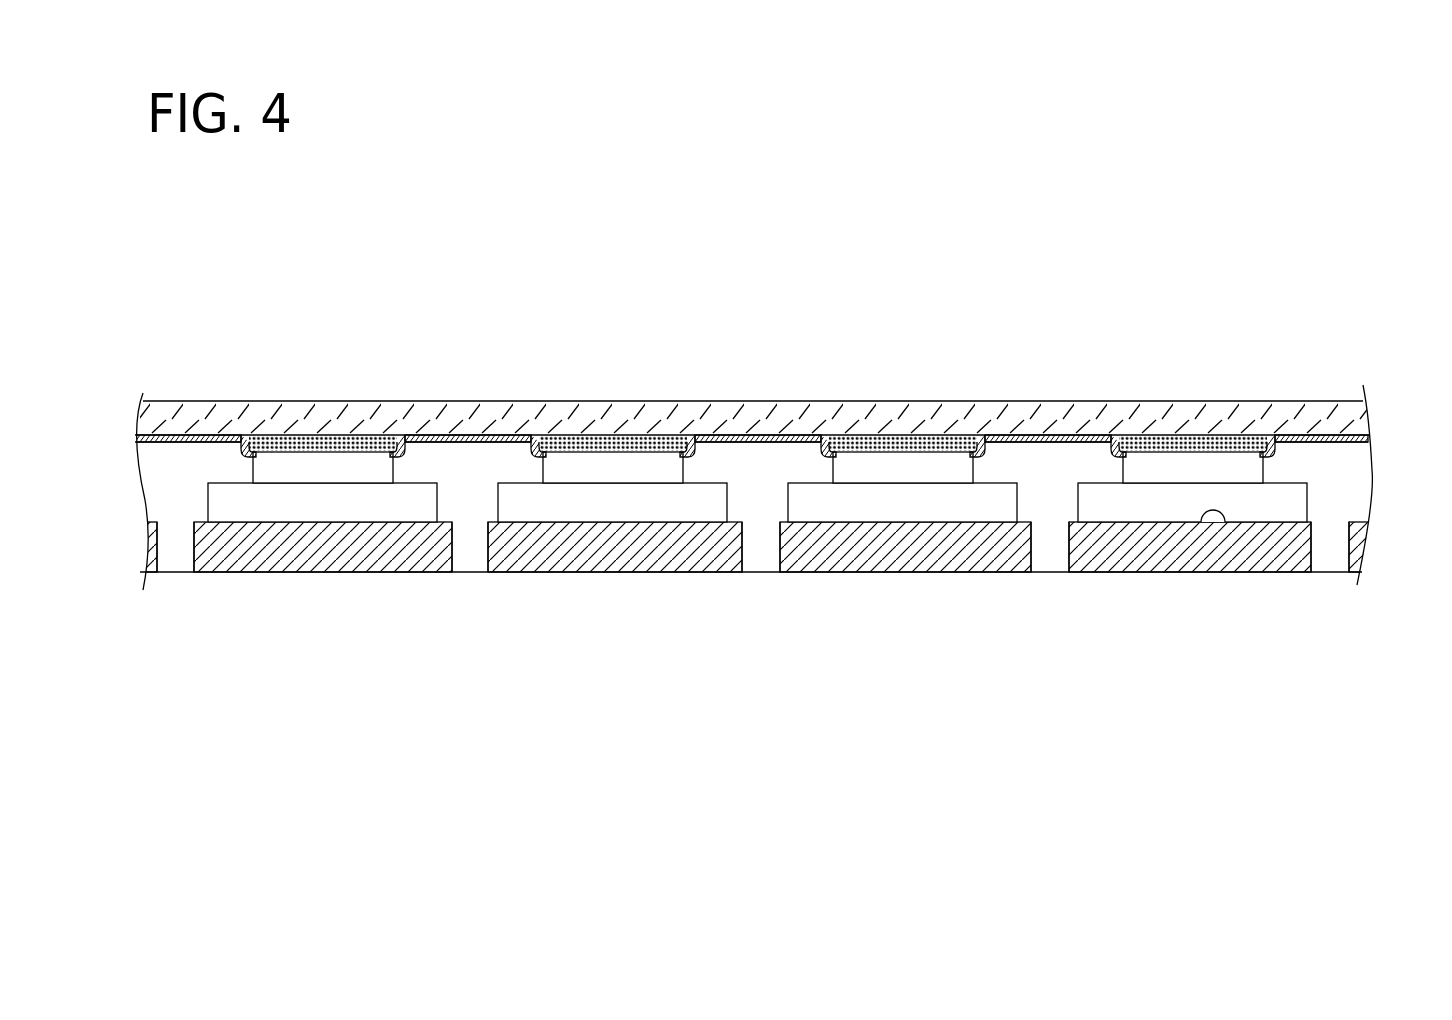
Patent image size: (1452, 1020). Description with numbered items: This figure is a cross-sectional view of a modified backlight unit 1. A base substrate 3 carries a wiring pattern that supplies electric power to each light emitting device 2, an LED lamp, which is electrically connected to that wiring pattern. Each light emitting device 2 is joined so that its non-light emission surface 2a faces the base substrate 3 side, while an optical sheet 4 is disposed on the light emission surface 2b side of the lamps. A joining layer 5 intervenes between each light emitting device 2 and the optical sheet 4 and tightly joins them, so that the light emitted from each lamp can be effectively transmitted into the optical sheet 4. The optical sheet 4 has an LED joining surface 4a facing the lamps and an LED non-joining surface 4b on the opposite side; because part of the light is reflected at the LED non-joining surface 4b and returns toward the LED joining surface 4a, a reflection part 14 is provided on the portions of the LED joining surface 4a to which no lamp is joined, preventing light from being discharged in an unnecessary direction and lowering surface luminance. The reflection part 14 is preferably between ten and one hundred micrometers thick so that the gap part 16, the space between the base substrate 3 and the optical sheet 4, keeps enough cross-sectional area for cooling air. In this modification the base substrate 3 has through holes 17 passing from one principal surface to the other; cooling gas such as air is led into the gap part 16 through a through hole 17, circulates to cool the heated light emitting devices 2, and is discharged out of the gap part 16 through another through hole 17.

The backlight unit 1 is at (1207, 296).
The light emitting device (LED lamp) 2 is at (881, 467).
The non-light emission surface 2a is at (1216, 534).
The light emission surface 2b is at (1195, 455).
The base substrate 3 is at (1357, 545).
The optical sheet 4 is at (1298, 415).
The LED joining surface 4a is at (1365, 420).
The LED non-joining surface 4b is at (1362, 400).
The joining layer 5 is at (350, 440).
The reflection part 14 is at (183, 437).
The gap part 16 is at (178, 480).
The through hole 17 is at (172, 548).